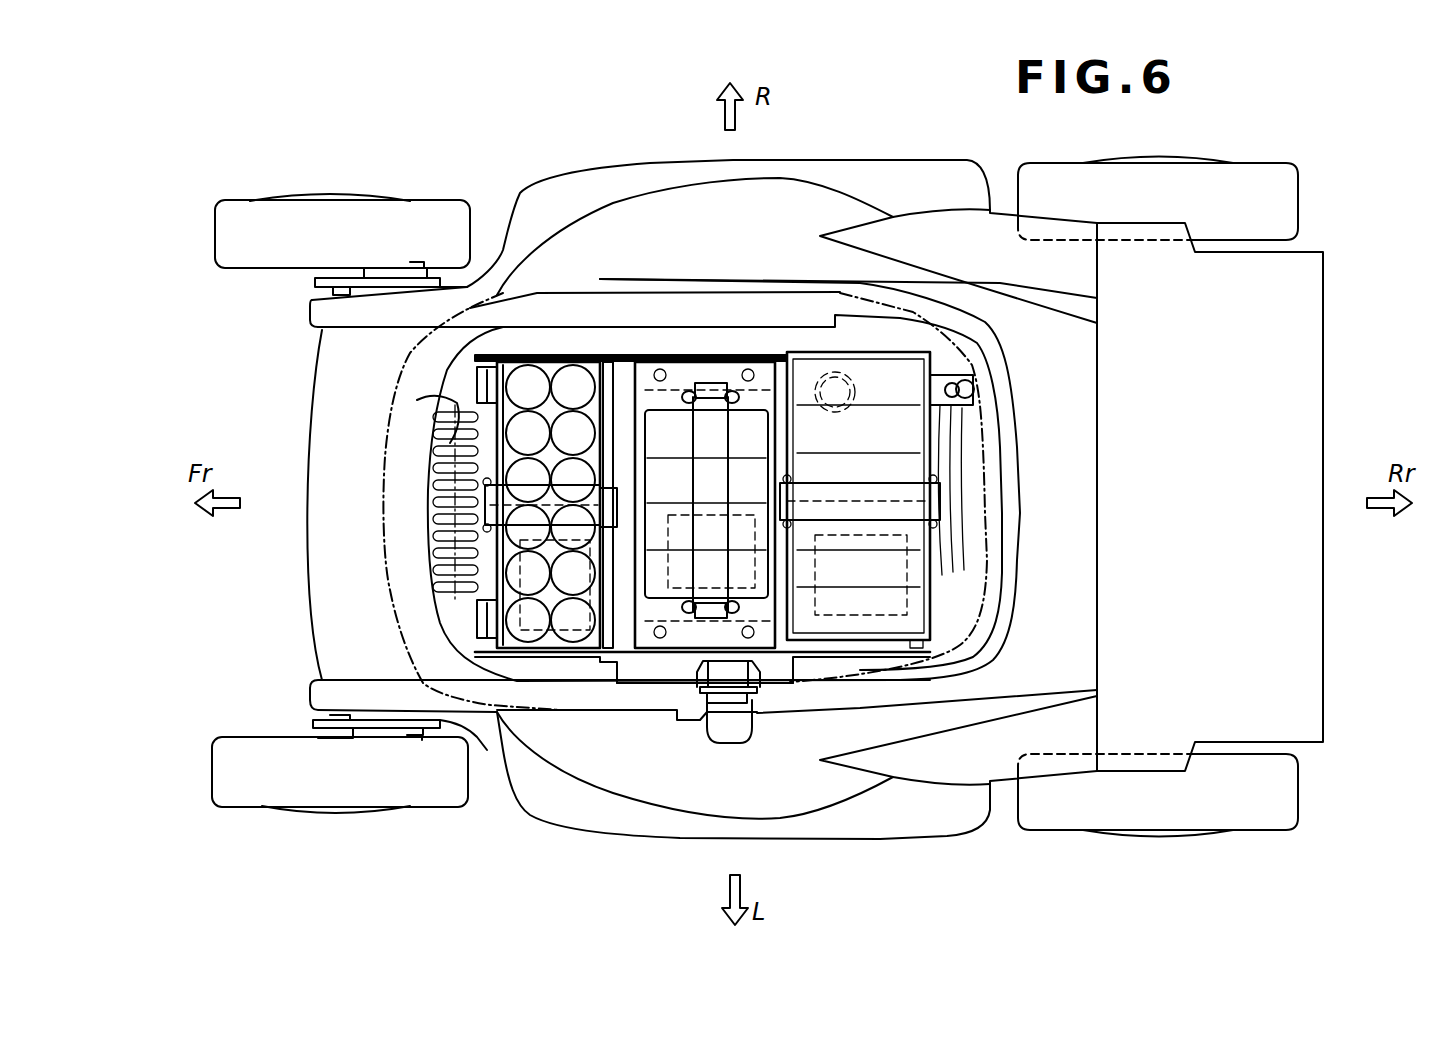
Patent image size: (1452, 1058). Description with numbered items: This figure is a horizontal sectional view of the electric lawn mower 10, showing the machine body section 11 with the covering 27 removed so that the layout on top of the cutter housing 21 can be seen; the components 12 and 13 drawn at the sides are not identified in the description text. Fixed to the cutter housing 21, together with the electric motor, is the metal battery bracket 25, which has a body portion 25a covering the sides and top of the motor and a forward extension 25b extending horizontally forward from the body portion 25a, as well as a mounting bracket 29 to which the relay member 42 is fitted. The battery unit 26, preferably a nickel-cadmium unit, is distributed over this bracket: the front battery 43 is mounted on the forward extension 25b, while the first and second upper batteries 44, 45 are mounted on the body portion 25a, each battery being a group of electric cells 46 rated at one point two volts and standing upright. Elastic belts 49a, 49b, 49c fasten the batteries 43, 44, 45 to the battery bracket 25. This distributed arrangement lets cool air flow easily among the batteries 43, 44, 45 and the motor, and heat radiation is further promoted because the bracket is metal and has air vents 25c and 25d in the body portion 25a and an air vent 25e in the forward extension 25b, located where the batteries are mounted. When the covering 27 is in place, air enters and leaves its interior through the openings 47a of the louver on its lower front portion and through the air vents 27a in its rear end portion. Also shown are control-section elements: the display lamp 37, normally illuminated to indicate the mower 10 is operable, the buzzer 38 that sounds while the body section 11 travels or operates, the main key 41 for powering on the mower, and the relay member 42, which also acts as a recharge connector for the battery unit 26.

The electric lawn mower 10 is at (262, 135).
The machine body section 11 is at (492, 165).
The front wheels 12 is at (262, 272).
The rear wheels 13 is at (1298, 200).
The cutter housing 21 is at (915, 845).
The battery bracket 25 is at (597, 662).
The body portion 25a is at (897, 627).
The forward extension 25b is at (588, 628).
The air vent 25c is at (520, 575).
The air vent 25d is at (610, 672).
The air vent 25e is at (876, 612).
The battery unit 26 is at (757, 218).
The covering 27 is at (1013, 556).
The air vents 27a is at (950, 498).
The mounting bracket 29 is at (782, 712).
The display lamp 37 is at (973, 390).
The buzzer 38 is at (862, 372).
The main key 41 is at (722, 703).
The relay member 42 is at (674, 585).
The front battery 43 is at (605, 355).
The first upper battery 44 is at (677, 397).
The second upper battery 45 is at (803, 352).
The electric cells 46 is at (548, 383).
The openings 47a is at (417, 400).
The elastic belt 49a is at (520, 463).
The elastic belt 49b is at (770, 476).
The elastic belt 49c is at (935, 480).